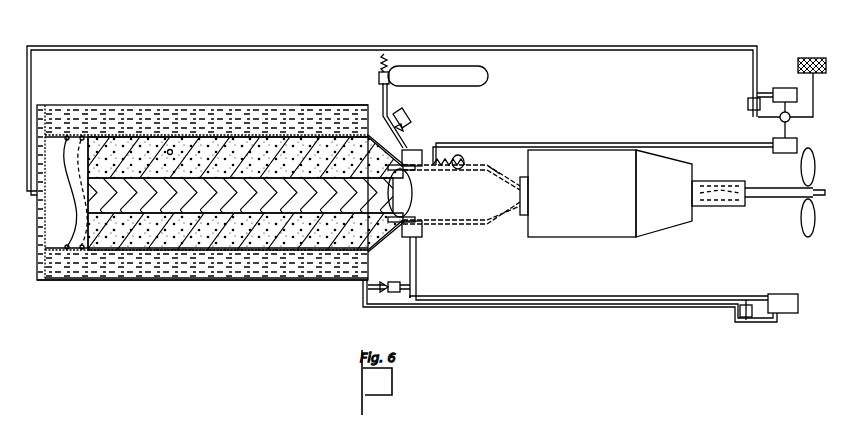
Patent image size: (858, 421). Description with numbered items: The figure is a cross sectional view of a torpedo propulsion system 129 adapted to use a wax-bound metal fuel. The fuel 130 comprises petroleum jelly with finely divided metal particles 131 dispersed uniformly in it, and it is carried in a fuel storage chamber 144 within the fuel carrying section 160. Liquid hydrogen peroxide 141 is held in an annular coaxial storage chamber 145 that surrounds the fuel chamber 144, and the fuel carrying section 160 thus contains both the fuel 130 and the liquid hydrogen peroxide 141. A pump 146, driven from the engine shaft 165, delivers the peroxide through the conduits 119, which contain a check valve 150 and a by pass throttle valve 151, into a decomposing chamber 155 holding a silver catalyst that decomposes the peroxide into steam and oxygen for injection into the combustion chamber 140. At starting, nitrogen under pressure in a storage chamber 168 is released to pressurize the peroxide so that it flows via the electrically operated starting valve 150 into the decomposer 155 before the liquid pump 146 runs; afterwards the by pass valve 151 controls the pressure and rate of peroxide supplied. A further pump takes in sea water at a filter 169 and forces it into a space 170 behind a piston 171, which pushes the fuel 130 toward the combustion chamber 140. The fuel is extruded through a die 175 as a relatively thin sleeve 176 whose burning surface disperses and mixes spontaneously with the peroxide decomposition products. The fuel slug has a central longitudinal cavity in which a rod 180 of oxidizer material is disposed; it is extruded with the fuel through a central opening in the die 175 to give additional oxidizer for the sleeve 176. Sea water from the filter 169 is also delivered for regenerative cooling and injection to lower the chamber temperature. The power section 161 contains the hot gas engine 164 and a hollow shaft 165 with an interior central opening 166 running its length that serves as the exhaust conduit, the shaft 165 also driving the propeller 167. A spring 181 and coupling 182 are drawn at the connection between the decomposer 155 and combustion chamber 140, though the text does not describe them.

The torpedo propulsion system 129 is at (128, 38).
The fuel 130 is at (150, 150).
The metal particles 131 is at (172, 153).
The liquid hydrogen peroxide 141 is at (182, 118).
The annular coaxial storage chamber 145 is at (228, 106).
The fuel storage chamber 144 is at (125, 252).
The fuel carrying section 160 is at (310, 145).
The rod 180 is at (276, 195).
The piston 171 is at (78, 160).
The space 170 is at (62, 235).
The die 175 is at (413, 190).
The sleeve 176 is at (415, 169).
The combustion chamber 140 is at (466, 212).
The spring 181 is at (455, 160).
The coupling 182 is at (492, 172).
The decomposing chamber 155 is at (410, 150).
The storage chamber 168 is at (440, 84).
The filter 169 is at (804, 60).
The power section 161 is at (652, 228).
The hot gas engine 164 is at (680, 218).
The interior central opening 166 is at (716, 184).
The hollow shaft 165 is at (757, 199).
The propeller 167 is at (812, 226).
The conduits 119 is at (577, 303).
The pump 146 is at (785, 313).
The by pass throttle valve 151 is at (740, 322).
The check valve 150 is at (393, 283).